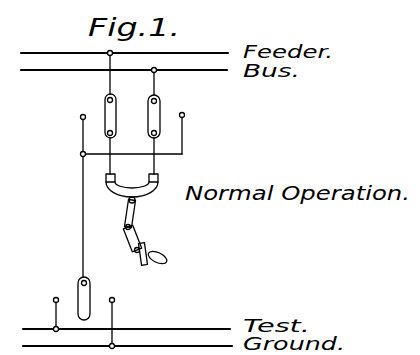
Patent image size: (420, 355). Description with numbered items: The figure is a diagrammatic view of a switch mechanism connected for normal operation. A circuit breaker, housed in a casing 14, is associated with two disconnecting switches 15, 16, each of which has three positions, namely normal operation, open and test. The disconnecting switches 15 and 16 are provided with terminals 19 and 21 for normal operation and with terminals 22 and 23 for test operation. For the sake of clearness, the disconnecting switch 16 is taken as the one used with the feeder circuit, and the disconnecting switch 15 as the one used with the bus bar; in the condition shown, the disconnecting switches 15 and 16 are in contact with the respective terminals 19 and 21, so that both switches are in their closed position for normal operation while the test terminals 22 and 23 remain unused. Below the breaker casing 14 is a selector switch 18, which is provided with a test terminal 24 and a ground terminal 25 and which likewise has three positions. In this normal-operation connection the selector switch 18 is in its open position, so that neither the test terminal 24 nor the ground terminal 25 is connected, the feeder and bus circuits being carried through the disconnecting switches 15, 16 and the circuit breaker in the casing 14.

The circuit breaker casing 14 is at (137, 216).
The disconnecting switch 15 is at (148, 118).
The disconnecting switch 16 is at (116, 101).
The selector switch 18 is at (91, 300).
The terminal 19 is at (158, 100).
The terminal 21 is at (125, 137).
The terminal 22 is at (185, 115).
The terminal 23 is at (81, 117).
The test terminal 24 is at (53, 300).
The ground terminal 25 is at (115, 299).